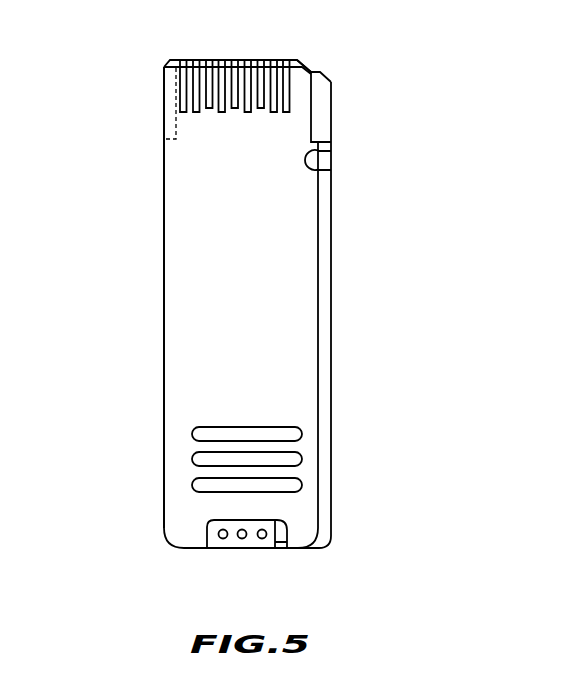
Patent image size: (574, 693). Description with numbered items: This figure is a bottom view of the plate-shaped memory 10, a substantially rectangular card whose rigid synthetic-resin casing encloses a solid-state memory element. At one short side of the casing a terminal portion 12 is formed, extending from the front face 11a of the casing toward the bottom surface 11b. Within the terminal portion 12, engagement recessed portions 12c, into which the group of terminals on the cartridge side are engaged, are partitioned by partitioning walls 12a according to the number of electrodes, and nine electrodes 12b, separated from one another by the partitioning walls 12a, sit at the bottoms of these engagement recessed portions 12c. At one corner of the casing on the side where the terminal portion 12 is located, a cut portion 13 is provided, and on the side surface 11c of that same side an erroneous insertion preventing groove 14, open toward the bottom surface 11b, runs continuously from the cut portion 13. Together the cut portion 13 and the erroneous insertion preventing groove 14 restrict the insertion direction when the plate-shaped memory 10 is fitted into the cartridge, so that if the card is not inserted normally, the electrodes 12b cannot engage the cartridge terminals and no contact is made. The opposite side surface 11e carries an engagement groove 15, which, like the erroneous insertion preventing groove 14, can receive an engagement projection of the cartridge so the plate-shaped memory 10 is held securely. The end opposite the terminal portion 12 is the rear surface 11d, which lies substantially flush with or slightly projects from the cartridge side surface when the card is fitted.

The plate-shaped memory 10 is at (266, 304).
The front face 11a is at (170, 60).
The bottom surface 11b is at (177, 228).
The side surface 11c is at (333, 375).
The rear surface 11d is at (298, 548).
The other side surface 11e is at (163, 297).
The terminal portion 12 is at (253, 106).
The partitioning walls 12a is at (201, 112).
The electrodes 12b is at (209, 108).
The engagement recessed portions 12c is at (310, 58).
The cut portion 13 is at (307, 62).
The erroneous insertion preventing groove 14 is at (318, 102).
The engagement groove 15 is at (170, 104).